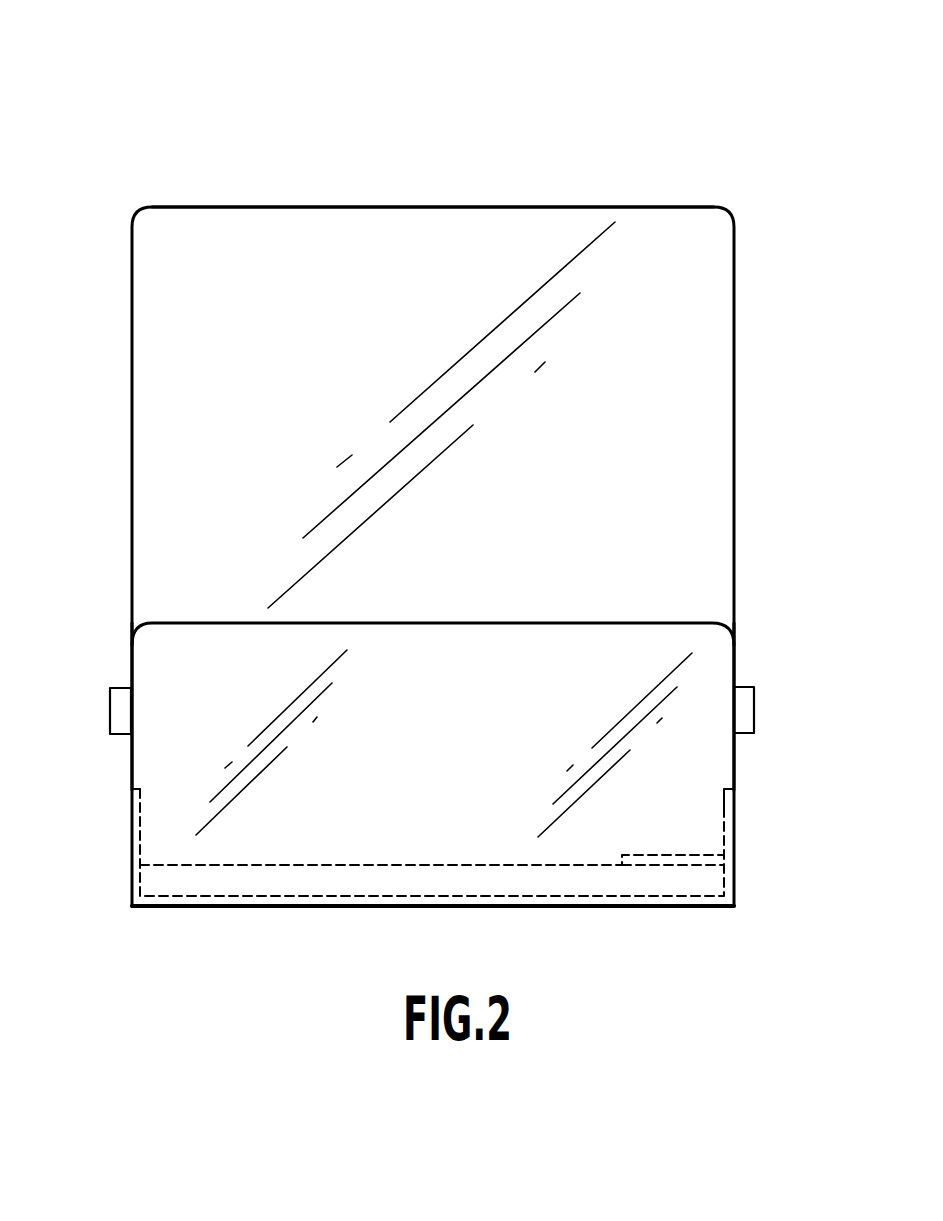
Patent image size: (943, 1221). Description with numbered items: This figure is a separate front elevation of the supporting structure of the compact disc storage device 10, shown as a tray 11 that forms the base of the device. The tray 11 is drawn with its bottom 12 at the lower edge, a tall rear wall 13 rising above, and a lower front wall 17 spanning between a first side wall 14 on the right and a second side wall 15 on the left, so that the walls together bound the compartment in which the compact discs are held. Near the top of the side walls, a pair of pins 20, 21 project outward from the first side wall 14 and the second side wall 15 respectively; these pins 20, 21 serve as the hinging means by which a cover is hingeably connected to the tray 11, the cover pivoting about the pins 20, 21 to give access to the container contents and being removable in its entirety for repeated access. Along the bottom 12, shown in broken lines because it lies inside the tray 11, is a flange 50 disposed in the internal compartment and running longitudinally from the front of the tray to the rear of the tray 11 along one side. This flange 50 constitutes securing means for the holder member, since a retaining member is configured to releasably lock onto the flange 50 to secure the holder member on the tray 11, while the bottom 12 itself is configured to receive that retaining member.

The device for storing and holding compact discs 10 is at (740, 138).
The tray 11 is at (734, 782).
The bottom 12 is at (603, 907).
The rear wall 13 is at (490, 212).
The first side wall 14 is at (734, 655).
The second side wall 15 is at (131, 654).
The front wall 17 is at (660, 640).
The pin 20 is at (754, 708).
The pin 21 is at (110, 701).
The flange 50 is at (675, 855).